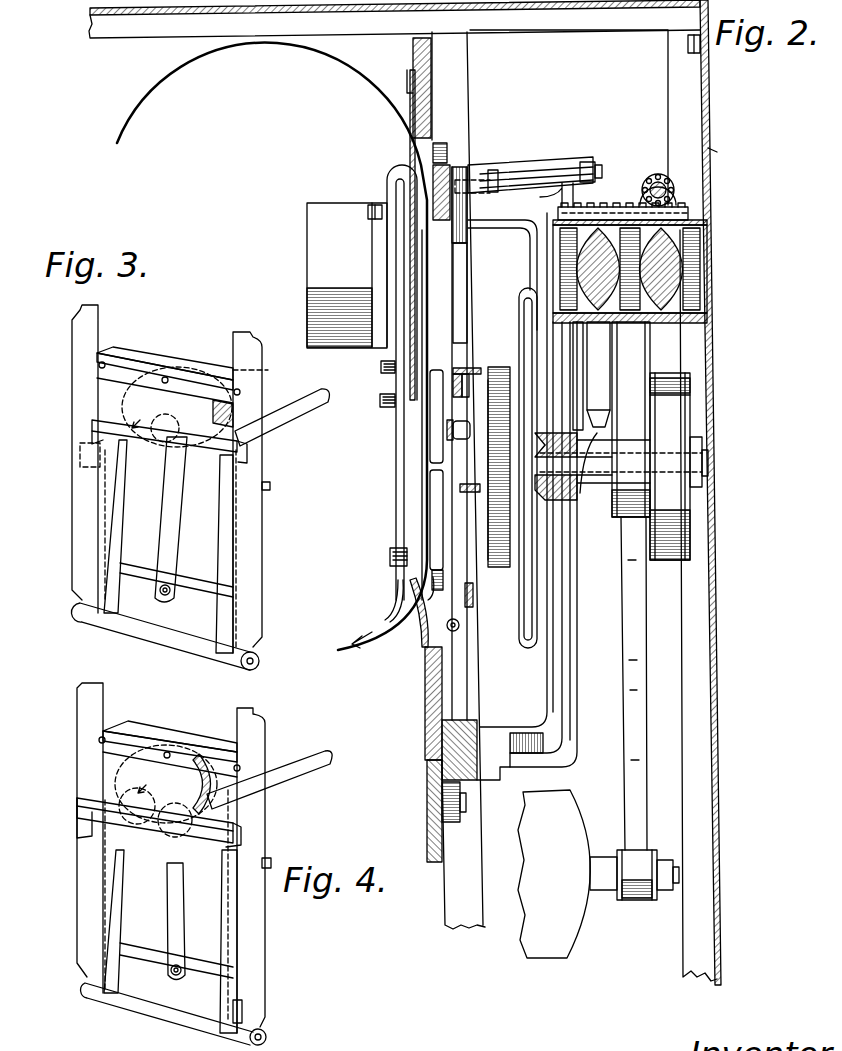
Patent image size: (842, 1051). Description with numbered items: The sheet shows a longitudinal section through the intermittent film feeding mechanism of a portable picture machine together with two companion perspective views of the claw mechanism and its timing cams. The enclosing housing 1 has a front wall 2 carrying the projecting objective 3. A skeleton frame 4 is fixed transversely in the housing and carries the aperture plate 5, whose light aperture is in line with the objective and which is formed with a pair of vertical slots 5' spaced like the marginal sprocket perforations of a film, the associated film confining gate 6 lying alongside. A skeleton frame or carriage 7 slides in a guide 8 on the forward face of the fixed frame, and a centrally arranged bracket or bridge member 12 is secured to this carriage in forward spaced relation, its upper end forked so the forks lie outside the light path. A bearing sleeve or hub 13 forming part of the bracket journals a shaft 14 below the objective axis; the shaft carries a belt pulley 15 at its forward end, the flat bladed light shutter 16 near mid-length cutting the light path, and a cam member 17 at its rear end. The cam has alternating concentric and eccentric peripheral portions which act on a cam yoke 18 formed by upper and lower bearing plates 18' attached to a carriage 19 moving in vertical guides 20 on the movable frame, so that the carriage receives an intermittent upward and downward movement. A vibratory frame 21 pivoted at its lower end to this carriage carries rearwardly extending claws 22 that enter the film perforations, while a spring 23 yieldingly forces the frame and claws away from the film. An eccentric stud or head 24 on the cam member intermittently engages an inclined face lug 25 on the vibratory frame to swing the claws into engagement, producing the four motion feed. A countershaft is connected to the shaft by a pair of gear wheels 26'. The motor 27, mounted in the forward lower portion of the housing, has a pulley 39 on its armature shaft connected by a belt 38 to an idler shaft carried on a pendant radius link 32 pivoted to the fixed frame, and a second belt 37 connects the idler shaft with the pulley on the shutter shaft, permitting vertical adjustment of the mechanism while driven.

In FIG. 2, the enclosing housing 1 is at (546, 10).
In FIG. 2, the front wall 2 is at (700, 112).
In FIG. 2, the objective 3 is at (680, 255).
In FIG. 2, the skeleton frame 4 is at (431, 68).
In FIG. 2, the aperture plate 5 is at (305, 346).
In FIG. 2, the vertical slots 5' is at (399, 558).
In FIG. 2, the film confining gate 6 is at (387, 265).
In FIG. 2, the skeleton frame or carriage 7 is at (450, 178).
In FIG. 2, the guide 8 is at (448, 822).
In FIG. 2, the bracket or bridge member 12 is at (580, 612).
In FIG. 2, the bearing sleeve or hub 13 is at (612, 502).
In FIG. 2, the shaft 14 is at (583, 463).
In FIG. 3, the shaft 14 is at (275, 432).
In FIG. 4, the shaft 14 is at (297, 785).
In FIG. 2, the belt pulley 15 is at (683, 558).
In FIG. 2, the light shutter 16 is at (472, 312).
In FIG. 2, the cam member 17 is at (486, 374).
In FIG. 3, the cam member 17 is at (135, 397).
In FIG. 4, the cam member 17 is at (130, 768).
In FIG. 3, the cam yoke 18 is at (208, 376).
In FIG. 4, the cam yoke 18 is at (210, 757).
In FIG. 2, the bearing plates 18' is at (483, 429).
In FIG. 3, the bearing plates 18' is at (200, 420).
In FIG. 4, the bearing plates 18' is at (205, 782).
In FIG. 2, the carriage 19 is at (473, 598).
In FIG. 3, the carriage 19 is at (82, 543).
In FIG. 4, the carriage 19 is at (270, 948).
In FIG. 2, the vertical guides 20 is at (462, 320).
In FIG. 2, the vibratory frame 21 is at (443, 528).
In FIG. 3, the vibratory frame 21 is at (114, 522).
In FIG. 4, the vibratory frame 21 is at (114, 902).
In FIG. 2, the claws 22 is at (445, 427).
In FIG. 3, the claws 22 is at (90, 436).
In FIG. 4, the claws 22 is at (78, 815).
In FIG. 3, the spring 23 is at (178, 523).
In FIG. 4, the spring 23 is at (180, 900).
In FIG. 2, the stud or head 24 is at (505, 420).
In FIG. 3, the stud or head 24 is at (172, 440).
In FIG. 4, the stud or head 24 is at (176, 806).
In FIG. 2, the cam or inclined face lug 25 is at (455, 432).
In FIG. 3, the cam or inclined face lug 25 is at (149, 416).
In FIG. 4, the cam or inclined face lug 25 is at (144, 800).
In FIG. 2, the gear wheels 26' is at (529, 468).
In FIG. 2, the motor 27 is at (567, 874).
In FIG. 2, the pendant radius link 32 is at (580, 160).
In FIG. 2, the belt 37 is at (666, 562).
In FIG. 2, the belt 38 is at (640, 748).
In FIG. 2, the pulley 39 is at (622, 897).